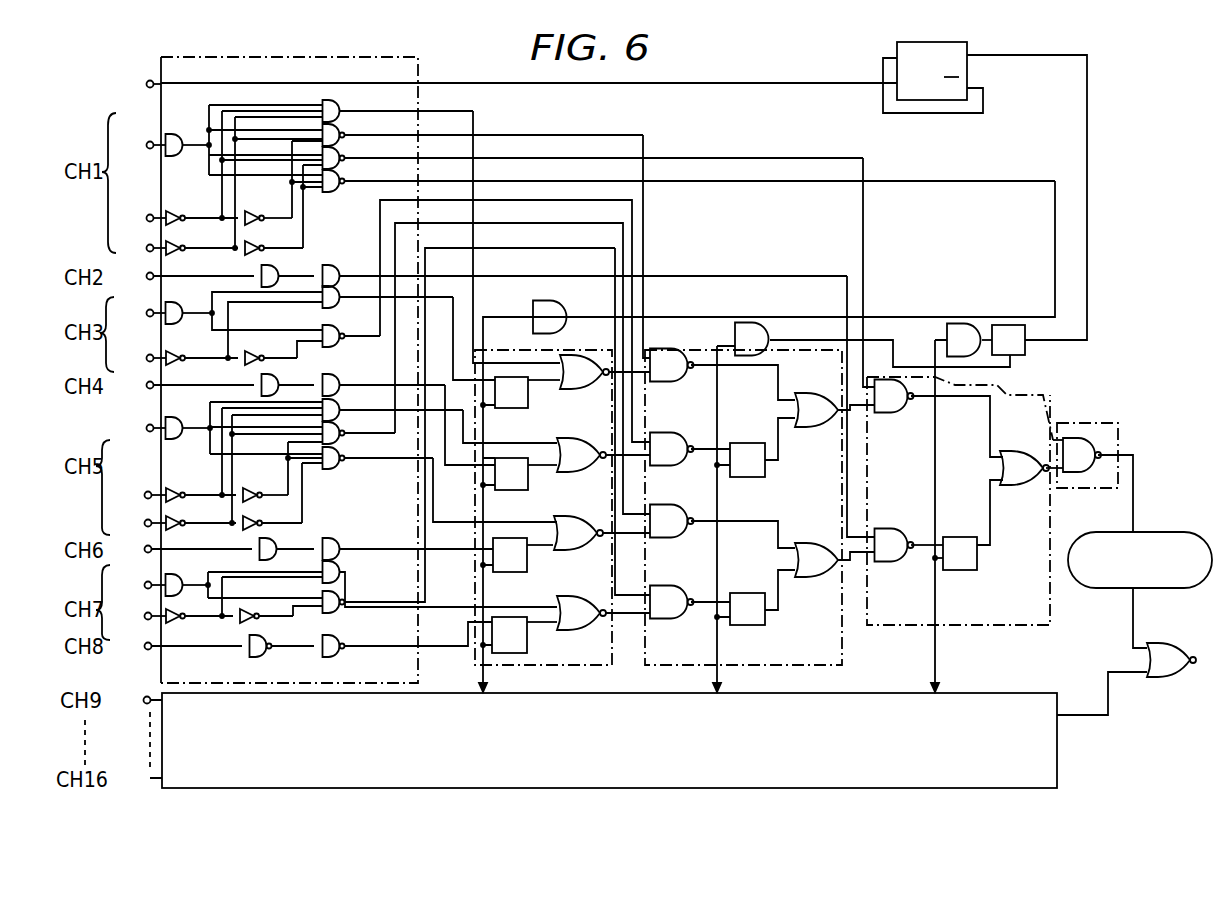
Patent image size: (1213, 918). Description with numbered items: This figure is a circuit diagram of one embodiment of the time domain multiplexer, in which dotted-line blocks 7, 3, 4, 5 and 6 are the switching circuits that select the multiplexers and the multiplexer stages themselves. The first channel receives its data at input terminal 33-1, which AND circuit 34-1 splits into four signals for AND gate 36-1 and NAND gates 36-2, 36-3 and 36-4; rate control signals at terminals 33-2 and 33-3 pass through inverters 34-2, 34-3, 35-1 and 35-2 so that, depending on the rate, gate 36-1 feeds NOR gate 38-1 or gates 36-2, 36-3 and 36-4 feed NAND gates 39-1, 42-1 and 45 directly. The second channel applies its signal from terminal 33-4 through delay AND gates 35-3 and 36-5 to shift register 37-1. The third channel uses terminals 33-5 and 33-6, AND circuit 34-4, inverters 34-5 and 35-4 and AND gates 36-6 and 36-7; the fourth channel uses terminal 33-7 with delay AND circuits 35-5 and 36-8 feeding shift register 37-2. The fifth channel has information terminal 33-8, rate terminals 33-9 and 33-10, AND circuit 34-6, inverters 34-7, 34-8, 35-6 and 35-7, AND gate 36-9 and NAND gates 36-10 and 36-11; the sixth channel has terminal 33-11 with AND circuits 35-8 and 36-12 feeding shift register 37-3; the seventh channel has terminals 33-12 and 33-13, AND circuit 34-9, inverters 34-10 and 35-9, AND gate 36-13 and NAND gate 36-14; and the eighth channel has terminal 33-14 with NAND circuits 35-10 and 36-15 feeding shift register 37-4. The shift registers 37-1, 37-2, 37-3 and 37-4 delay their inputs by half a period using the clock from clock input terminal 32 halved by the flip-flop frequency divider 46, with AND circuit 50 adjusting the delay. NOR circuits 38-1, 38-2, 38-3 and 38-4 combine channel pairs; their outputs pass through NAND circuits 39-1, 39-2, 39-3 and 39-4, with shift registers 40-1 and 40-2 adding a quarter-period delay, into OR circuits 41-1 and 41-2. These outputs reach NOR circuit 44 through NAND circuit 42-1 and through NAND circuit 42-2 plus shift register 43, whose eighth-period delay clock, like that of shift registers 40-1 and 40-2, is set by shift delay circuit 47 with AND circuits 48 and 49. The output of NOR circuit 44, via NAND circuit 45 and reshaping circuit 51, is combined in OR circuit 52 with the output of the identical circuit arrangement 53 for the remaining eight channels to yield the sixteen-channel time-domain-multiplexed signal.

The switching circuit block 3 is at (566, 675).
The switching circuit block 4 is at (784, 675).
The switching circuit block 5 is at (965, 645).
The switching circuit block 6 is at (1062, 496).
The switching circuit block 7 is at (428, 72).
The clock input terminal 32 is at (149, 80).
The input terminal 33-1 is at (146, 143).
The bit rate control signal input terminal 33-2 is at (146, 217).
The bit rate control signal input terminal 33-3 is at (146, 247).
The input terminal 33-4 is at (146, 275).
The terminal 33-5 is at (146, 312).
The terminal 33-6 is at (146, 357).
The terminal 33-7 is at (146, 384).
The information input terminal 33-8 is at (146, 427).
The rate signal input terminal 33-9 is at (144, 494).
The rate signal input terminal 33-10 is at (144, 522).
The input terminal 33-11 is at (144, 548).
The information input terminal 33-12 is at (144, 584).
The bit rate signal input terminal 33-13 is at (144, 615).
The input terminal 33-14 is at (144, 645).
The AND circuit 34-1 is at (176, 127).
The inverter 34-2 is at (176, 211).
The inverter 34-3 is at (176, 248).
The AND circuit 34-4 is at (176, 305).
The inverter 34-5 is at (178, 350).
The AND circuit 34-6 is at (177, 420).
The inverter 34-7 is at (176, 488).
The inverter 34-8 is at (174, 523).
The AND circuit 34-9 is at (176, 579).
The inverter 34-10 is at (172, 622).
The inverter 35-1 is at (250, 212).
The inverter 35-2 is at (248, 248).
The AND gate 35-3 is at (262, 272).
The inverter 35-4 is at (248, 350).
The AND circuit 35-5 is at (262, 382).
The inverter 35-6 is at (250, 489).
The inverter 35-7 is at (248, 523).
The AND circuit 35-8 is at (260, 546).
The inverter 35-9 is at (250, 622).
The NAND circuit 35-10 is at (258, 656).
The AND gate 36-1 is at (326, 105).
The NAND gate 36-2 is at (326, 129).
The NAND gate 36-3 is at (326, 152).
The NAND gate 36-4 is at (326, 175).
The AND gate 36-5 is at (328, 268).
The AND gate 36-6 is at (322, 307).
The AND gate 36-7 is at (326, 344).
The AND circuit 36-8 is at (328, 378).
The AND gate 36-9 is at (328, 403).
The NAND gate 36-10 is at (328, 426).
The NAND gate 36-11 is at (328, 467).
The AND circuit 36-12 is at (326, 546).
The AND gate 36-13 is at (326, 572).
The NAND gate 36-14 is at (326, 611).
The NAND circuit 36-15 is at (322, 655).
The shift register 37-1 is at (510, 408).
The shift register 37-2 is at (510, 490).
The shift register 37-3 is at (510, 572).
The shift register 37-4 is at (527, 642).
The NOR circuit 38-1 is at (578, 355).
The NOR circuit 38-2 is at (576, 438).
The NOR circuit 38-3 is at (574, 516).
The NOR circuit 38-4 is at (576, 596).
The NAND circuit 39-1 is at (665, 348).
The NAND circuit 39-2 is at (666, 432).
The NAND circuit 39-3 is at (672, 505).
The NAND circuit 39-4 is at (673, 578).
The shift register 40-1 is at (765, 462).
The shift register 40-2 is at (765, 620).
The OR circuit 41-1 is at (810, 392).
The OR circuit 41-2 is at (810, 542).
The NAND circuit 42-1 is at (892, 414).
The NAND circuit 42-2 is at (892, 564).
The shift register 43 is at (958, 572).
The NOR circuit 44 is at (1023, 487).
The NAND circuit 45 is at (1080, 438).
The frequency divider 46 is at (968, 70).
The shift delay circuit 47 is at (1028, 355).
The AND circuit 48 is at (956, 324).
The AND circuit 49 is at (752, 322).
The AND circuit 50 is at (560, 300).
The reshaping circuit 51 is at (1138, 532).
The OR circuit 52 is at (1166, 643).
The circuit arrangement 53 is at (882, 692).